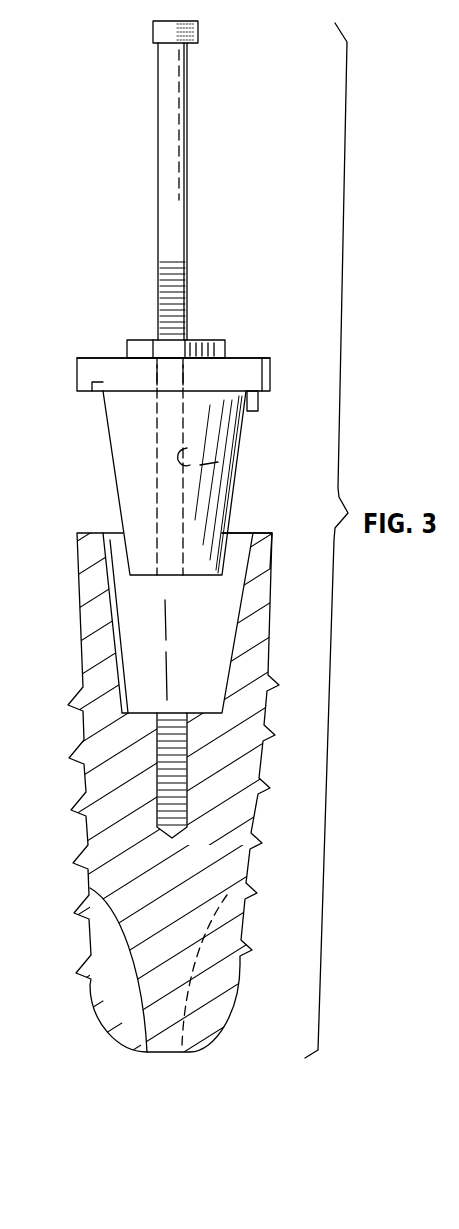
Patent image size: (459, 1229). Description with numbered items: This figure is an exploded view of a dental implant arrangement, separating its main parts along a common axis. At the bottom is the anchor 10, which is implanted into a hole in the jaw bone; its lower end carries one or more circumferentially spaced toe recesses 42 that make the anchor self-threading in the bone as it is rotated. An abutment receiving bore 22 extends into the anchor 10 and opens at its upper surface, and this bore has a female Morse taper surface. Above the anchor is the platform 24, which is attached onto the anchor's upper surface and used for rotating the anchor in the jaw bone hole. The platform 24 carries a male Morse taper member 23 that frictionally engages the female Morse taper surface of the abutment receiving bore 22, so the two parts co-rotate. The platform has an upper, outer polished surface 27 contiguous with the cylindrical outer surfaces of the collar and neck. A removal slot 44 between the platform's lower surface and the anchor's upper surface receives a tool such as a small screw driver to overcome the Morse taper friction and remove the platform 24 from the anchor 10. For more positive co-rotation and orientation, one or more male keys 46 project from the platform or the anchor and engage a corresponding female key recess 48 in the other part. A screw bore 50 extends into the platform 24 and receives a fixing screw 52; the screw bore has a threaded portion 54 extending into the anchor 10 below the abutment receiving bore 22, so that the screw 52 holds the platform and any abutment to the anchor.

The anchor 10 is at (273, 672).
The abutment receiving bore 22 is at (235, 637).
The male Morse taper member 23 is at (122, 448).
The platform 24 is at (255, 358).
The upper, outer polished surface 27 is at (77, 360).
The toe recess 42 is at (117, 1003).
The removal slot 44 is at (90, 393).
The male key 46 is at (255, 399).
The female key recess 48 is at (267, 535).
The screw bore 50 is at (235, 455).
The fixing screw 52 is at (182, 213).
The threaded portion 54 is at (157, 758).